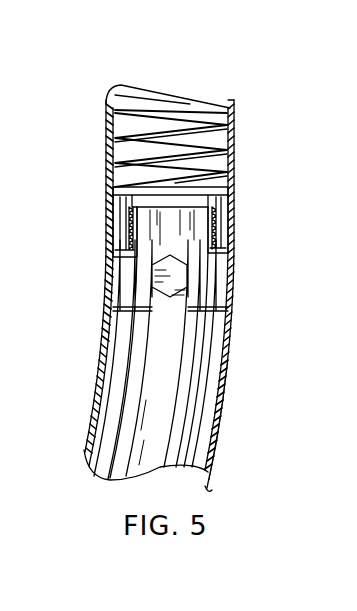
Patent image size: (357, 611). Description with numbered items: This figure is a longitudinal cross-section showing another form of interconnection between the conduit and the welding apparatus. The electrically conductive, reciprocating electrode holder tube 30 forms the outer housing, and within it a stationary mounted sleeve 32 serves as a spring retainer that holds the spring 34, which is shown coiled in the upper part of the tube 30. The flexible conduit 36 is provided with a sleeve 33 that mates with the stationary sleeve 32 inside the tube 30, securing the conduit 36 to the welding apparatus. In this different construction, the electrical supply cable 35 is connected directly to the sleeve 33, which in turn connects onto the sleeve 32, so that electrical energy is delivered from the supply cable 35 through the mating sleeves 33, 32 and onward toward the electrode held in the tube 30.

The tube 30 is at (106, 170).
The stationary mounted sleeve 32 is at (224, 214).
The sleeve 33 is at (127, 251).
The spring 34 is at (133, 97).
The electrical supply cable 35 is at (175, 383).
The conduit 36 is at (222, 393).